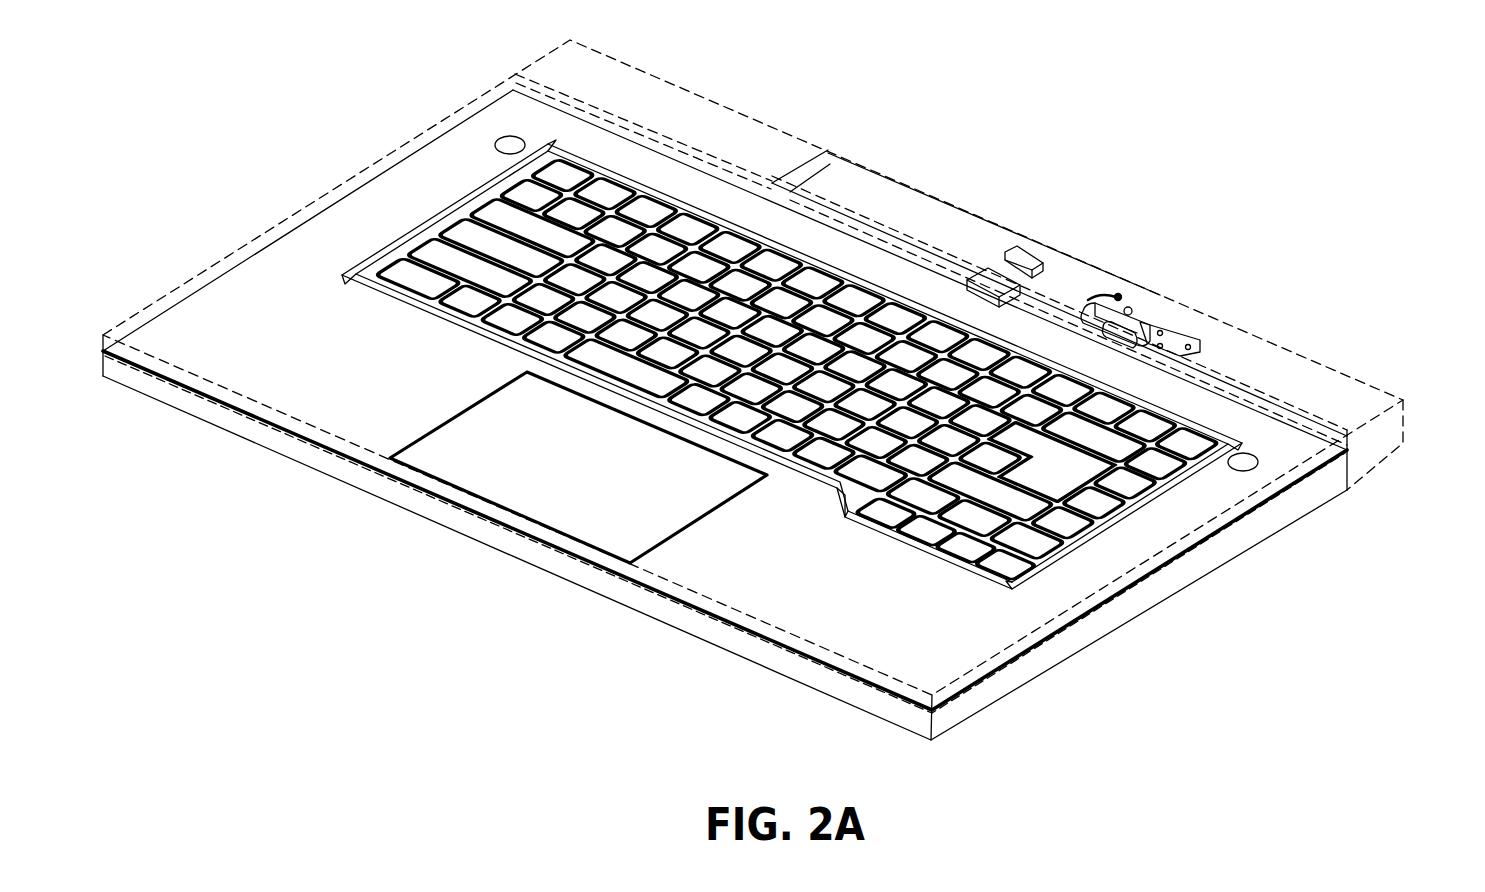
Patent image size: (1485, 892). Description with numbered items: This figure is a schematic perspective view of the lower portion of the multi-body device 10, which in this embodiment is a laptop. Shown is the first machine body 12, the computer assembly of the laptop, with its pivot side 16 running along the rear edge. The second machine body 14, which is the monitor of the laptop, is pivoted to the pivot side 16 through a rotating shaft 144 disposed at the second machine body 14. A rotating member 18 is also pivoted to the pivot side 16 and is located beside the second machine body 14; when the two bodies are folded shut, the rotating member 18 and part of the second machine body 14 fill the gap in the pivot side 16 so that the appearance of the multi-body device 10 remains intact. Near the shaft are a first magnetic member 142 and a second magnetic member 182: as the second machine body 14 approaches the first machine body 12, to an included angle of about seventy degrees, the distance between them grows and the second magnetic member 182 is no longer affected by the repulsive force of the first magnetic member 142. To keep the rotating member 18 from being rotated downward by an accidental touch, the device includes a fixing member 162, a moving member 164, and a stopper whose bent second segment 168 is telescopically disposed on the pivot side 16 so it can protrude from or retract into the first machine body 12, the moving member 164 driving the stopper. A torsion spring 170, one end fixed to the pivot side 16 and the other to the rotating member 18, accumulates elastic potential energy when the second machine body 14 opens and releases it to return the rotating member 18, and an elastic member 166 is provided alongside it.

The multi-body device 10 is at (1403, 722).
The first machine body 12 is at (963, 713).
The second machine body 14 is at (882, 690).
The pivot side 16 is at (1405, 428).
The rotating member 18 is at (947, 205).
The first magnetic member 142 is at (990, 263).
The second magnetic member 182 is at (1025, 251).
The rotating shaft 144 is at (1091, 298).
The fixing member 162 is at (1178, 343).
The moving member 164 is at (1150, 322).
The elastic member 166 is at (1135, 335).
The second segment 168 is at (1130, 308).
The torsion spring 170 is at (1119, 294).